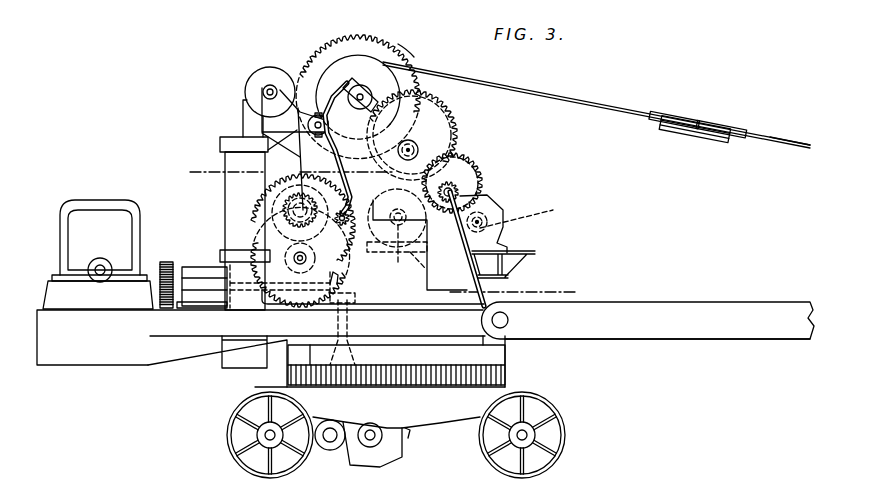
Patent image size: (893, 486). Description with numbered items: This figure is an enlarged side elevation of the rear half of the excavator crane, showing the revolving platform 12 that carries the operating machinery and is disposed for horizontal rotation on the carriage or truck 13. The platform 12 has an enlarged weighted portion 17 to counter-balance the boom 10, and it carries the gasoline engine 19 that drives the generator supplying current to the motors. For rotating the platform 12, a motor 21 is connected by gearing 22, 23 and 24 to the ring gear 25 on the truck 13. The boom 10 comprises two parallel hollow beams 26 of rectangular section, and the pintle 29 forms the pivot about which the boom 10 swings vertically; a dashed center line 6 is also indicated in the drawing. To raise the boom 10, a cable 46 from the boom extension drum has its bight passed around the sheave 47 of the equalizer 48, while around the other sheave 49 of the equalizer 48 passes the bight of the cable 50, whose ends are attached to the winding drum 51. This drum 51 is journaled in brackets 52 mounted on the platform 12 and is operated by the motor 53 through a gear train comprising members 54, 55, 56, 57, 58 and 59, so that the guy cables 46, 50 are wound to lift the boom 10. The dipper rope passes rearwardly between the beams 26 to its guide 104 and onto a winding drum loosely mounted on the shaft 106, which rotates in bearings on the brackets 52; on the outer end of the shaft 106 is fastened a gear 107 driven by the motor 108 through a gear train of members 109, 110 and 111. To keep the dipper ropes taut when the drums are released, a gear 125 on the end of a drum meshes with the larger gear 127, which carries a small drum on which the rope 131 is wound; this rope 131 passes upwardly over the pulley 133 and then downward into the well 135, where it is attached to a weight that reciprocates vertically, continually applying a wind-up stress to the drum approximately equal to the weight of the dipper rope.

The axis line 6 is at (379, 231).
The boom 10 is at (783, 293).
The revolving platform 12 is at (202, 327).
The carriage or truck 13 is at (455, 410).
The enlarged weighted portion 17 is at (82, 355).
The gasoline engine 19 is at (95, 212).
The motor 21 is at (186, 267).
The gearing 22 is at (180, 255).
The gearing 23 is at (373, 297).
The gearing 24 is at (369, 365).
The ring gear 25 is at (315, 378).
The hollow beams 26 is at (622, 325).
The pintle 29 is at (504, 320).
The cable 46 is at (778, 143).
The sheave 47 is at (732, 120).
The equalizer 48 is at (692, 143).
The sheave 49 is at (677, 107).
The cable 50 is at (601, 106).
The winding drum 51 is at (353, 60).
The brackets 52 is at (448, 245).
The motor 53 is at (493, 213).
The gear train member 54 is at (529, 210).
The gear train member 55 is at (470, 170).
The gear train member 56 is at (458, 187).
The gear train member 57 is at (447, 122).
The gear train member 58 is at (422, 144).
The gear train member 59 is at (411, 64).
The guide 104 is at (520, 278).
The shaft 106 is at (300, 264).
The gear 107 is at (342, 277).
The motor 108 is at (420, 245).
The gear train member 109 is at (424, 254).
The gear train member 110 is at (397, 204).
The gear train member 111 is at (345, 222).
The gear 125 is at (294, 259).
The larger gear 127 is at (265, 193).
The rope or cable 131 is at (304, 155).
The pulley 133 is at (263, 70).
The well 135 is at (230, 155).